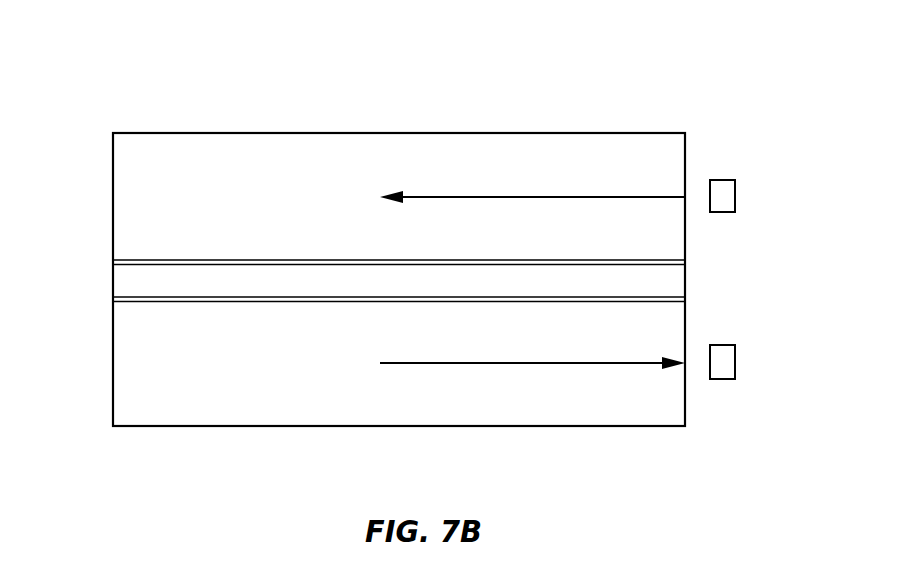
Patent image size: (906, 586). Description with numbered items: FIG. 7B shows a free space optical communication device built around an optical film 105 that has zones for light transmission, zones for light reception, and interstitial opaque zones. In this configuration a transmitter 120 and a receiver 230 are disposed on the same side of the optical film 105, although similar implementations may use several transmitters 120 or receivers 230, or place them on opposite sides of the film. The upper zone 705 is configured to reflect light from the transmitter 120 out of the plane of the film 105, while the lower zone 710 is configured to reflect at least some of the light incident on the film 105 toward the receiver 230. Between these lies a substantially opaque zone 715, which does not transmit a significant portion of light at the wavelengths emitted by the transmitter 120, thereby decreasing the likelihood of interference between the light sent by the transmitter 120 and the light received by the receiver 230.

The optical film 105 is at (318, 103).
The zone configured for light transmission 705 is at (550, 162).
The zone configured for light reception 710 is at (625, 398).
The substantially opaque zone 715 is at (118, 283).
The transmitter 120 is at (731, 180).
The receiver 230 is at (735, 345).